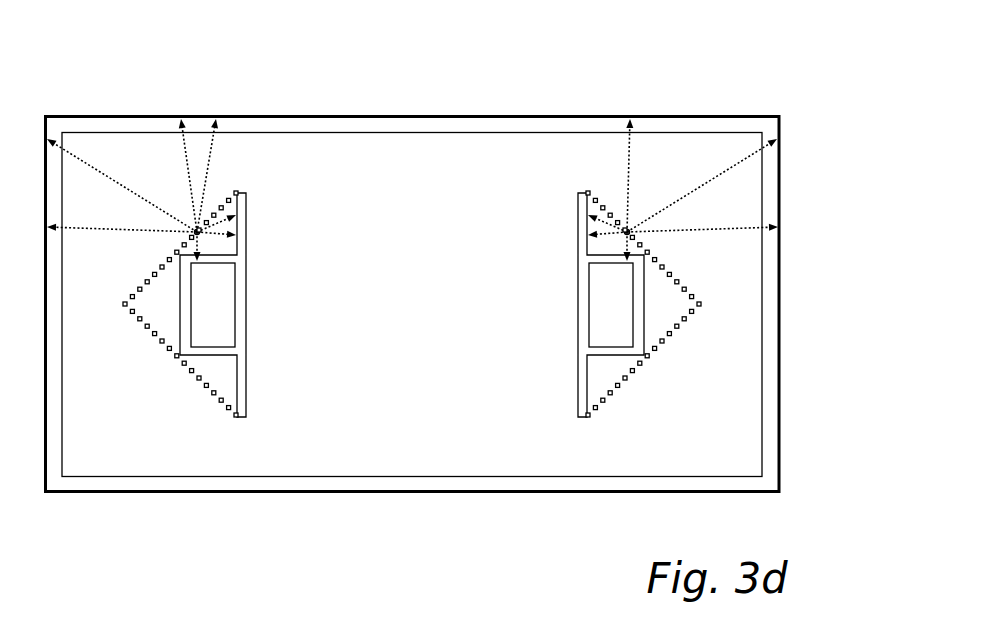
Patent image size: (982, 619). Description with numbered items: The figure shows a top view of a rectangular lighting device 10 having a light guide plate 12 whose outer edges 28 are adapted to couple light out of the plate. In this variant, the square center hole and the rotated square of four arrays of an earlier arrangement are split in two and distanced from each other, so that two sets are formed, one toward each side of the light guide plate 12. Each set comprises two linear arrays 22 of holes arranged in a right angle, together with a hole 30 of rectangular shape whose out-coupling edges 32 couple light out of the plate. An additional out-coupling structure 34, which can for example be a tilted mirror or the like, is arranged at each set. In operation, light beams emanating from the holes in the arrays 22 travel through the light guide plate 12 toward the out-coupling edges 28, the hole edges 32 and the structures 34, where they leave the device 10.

The lighting device 10 is at (778, 66).
The light guide plate 12 is at (105, 455).
The linear array 22 is at (134, 282).
The outer edges 28 is at (403, 116).
The hole 30 is at (228, 293).
The out-coupling edges 32 is at (197, 346).
The out-coupling structure 34 is at (247, 375).